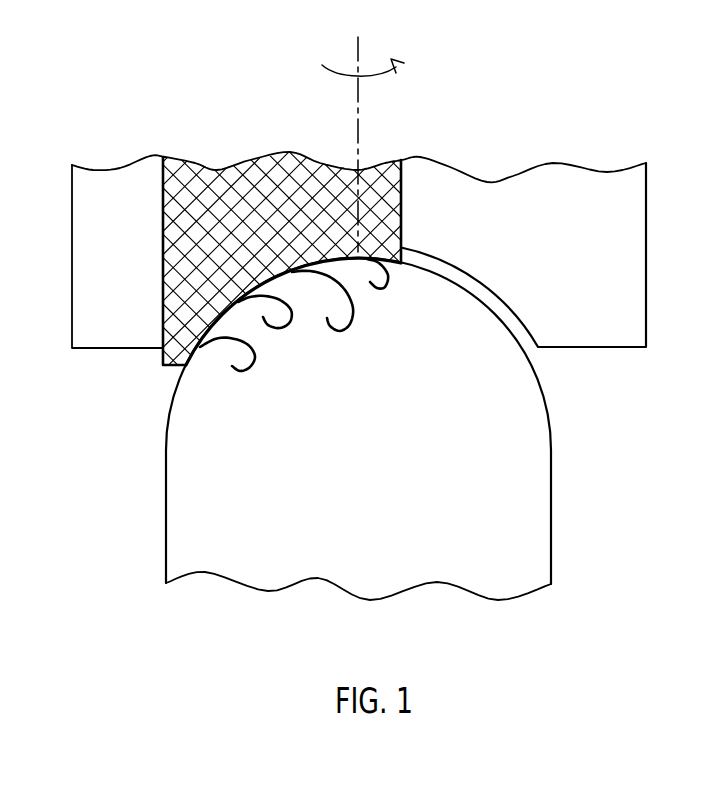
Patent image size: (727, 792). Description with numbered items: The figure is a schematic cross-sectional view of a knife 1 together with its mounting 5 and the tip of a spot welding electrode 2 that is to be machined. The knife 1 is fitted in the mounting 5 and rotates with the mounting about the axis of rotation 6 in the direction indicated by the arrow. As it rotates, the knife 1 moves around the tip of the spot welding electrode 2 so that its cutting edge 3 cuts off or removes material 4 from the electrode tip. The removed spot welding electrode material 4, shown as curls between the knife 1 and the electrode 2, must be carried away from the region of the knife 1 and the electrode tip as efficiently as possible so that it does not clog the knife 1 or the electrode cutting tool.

The knife 1 is at (260, 190).
The spot welding electrode 2 is at (535, 516).
The cutting edge 3 is at (207, 326).
The material 4 is at (290, 317).
The mounting 5 is at (104, 237).
The axis of rotation 6 is at (363, 130).